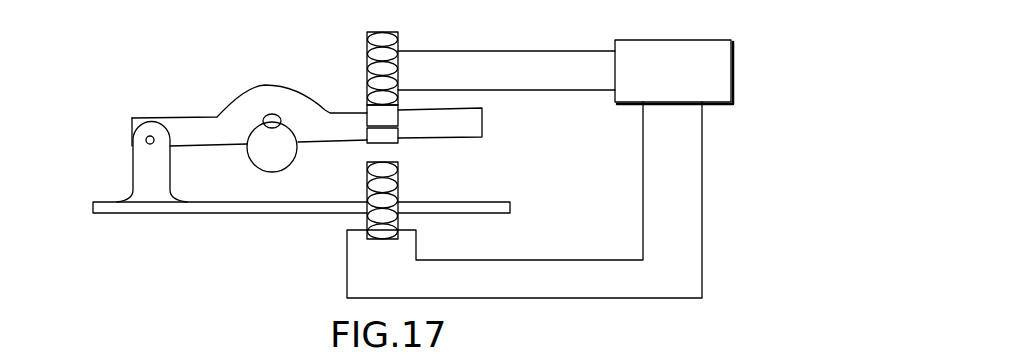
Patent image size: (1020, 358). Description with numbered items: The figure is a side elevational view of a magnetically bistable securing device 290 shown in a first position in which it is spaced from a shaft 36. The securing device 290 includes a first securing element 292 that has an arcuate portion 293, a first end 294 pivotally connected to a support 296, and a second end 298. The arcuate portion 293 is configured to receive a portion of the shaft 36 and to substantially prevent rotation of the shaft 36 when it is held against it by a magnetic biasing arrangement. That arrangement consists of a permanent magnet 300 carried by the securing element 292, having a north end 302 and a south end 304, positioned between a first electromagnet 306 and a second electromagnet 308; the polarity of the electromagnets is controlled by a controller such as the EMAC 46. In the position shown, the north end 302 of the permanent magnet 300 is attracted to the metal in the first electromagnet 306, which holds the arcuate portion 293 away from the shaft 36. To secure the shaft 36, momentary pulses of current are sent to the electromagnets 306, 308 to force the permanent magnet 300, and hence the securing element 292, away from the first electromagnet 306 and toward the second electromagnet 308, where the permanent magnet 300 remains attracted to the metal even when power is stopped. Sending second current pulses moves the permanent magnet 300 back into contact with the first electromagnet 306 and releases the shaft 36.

The magnetically bistable securing device 290 is at (229, 74).
The first securing element 292 is at (187, 128).
The arcuate portion 293 is at (266, 116).
The first end 294 is at (130, 123).
The support 296 is at (137, 175).
The shaft 36 is at (262, 155).
The second end 298 is at (482, 122).
The permanent magnet 300 is at (397, 133).
The north end 302 is at (367, 120).
The south end 304 is at (366, 138).
The first electromagnet 306 is at (400, 35).
The second electromagnet 308 is at (398, 180).
The EMAC 46 is at (731, 82).